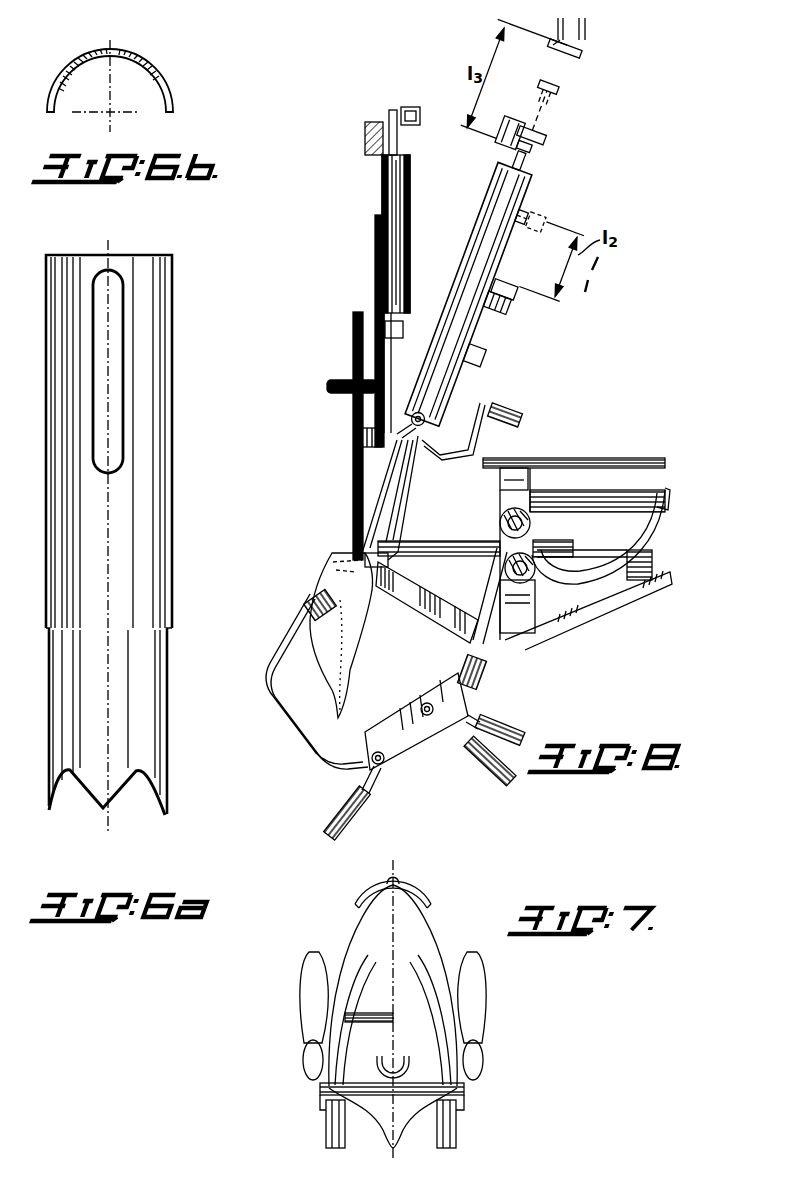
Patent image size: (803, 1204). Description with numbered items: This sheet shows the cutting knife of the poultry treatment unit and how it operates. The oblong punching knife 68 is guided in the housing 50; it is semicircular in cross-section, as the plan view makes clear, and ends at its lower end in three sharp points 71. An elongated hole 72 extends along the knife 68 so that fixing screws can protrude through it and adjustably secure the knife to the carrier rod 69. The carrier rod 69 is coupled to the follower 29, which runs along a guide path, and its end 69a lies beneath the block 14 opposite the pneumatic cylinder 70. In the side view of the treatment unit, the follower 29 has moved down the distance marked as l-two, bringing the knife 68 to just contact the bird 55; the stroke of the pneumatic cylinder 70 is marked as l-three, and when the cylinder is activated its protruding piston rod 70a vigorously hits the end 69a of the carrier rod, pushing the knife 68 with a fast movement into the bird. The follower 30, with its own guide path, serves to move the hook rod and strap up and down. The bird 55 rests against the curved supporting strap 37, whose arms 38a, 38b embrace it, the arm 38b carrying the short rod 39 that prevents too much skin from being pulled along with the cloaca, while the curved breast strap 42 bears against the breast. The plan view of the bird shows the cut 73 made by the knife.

In FIG. 6B, the punching knife 68 is at (175, 100).
In FIG. 6A, the punching knife 68 is at (150, 448).
In FIG. 8, the punching knife 68 is at (382, 487).
In FIG. 6A, the elongated hole 72 is at (113, 336).
In FIG. 6A, the sharp points 71 is at (152, 804).
In FIG. 8, the housing 50 is at (480, 236).
In FIG. 8, the cylinder head block 14 is at (503, 138).
In FIG. 8, the end of the carrier rod 69a is at (545, 150).
In FIG. 8, the pneumatic cylinder 70 is at (589, 44).
In FIG. 8, the piston rod 70a is at (566, 52).
In FIG. 8, the follower 29 is at (546, 218).
In FIG. 8, the follower 30 is at (596, 272).
In FIG. 8, the carrier rod 69 is at (388, 463).
In FIG. 8, the bird 55 is at (335, 624).
In FIG. 7, the breast strap 42 is at (430, 898).
In FIG. 7, the short rod 39 is at (347, 1015).
In FIG. 7, the arm of the supporting strap 38a is at (455, 1026).
In FIG. 7, the arm of the supporting strap 38b is at (340, 1053).
In FIG. 7, the cut 73 is at (405, 1068).
In FIG. 7, the supporting strap 37 is at (350, 1100).